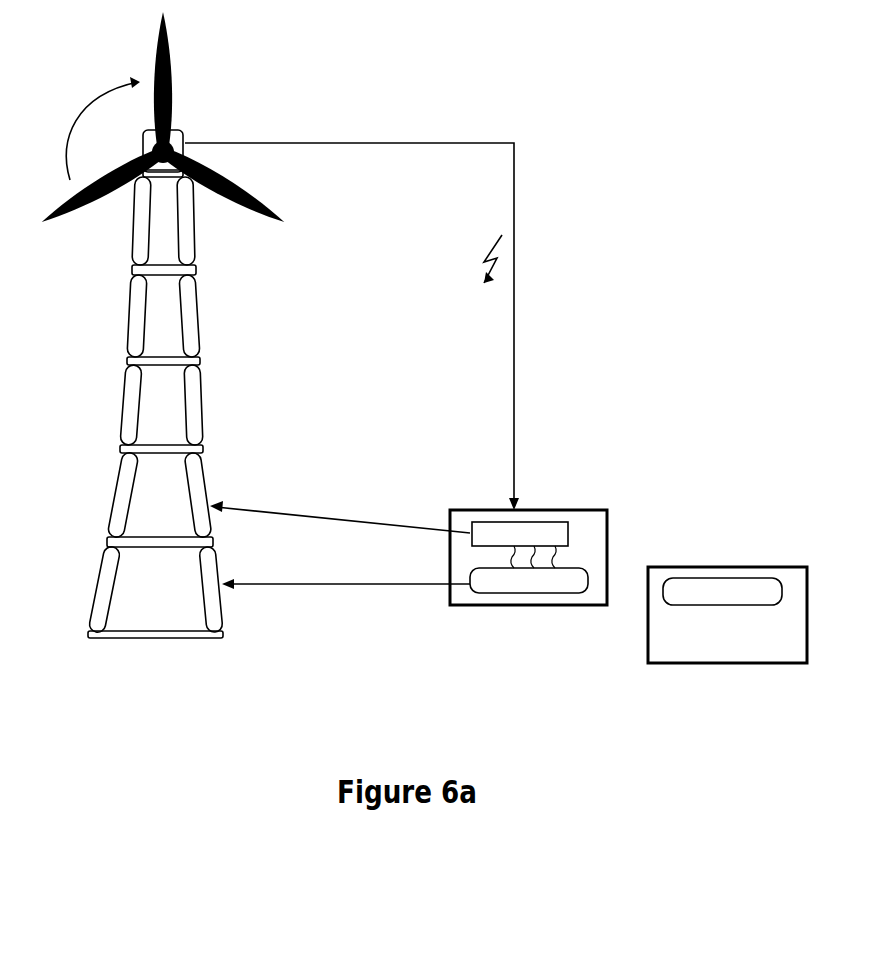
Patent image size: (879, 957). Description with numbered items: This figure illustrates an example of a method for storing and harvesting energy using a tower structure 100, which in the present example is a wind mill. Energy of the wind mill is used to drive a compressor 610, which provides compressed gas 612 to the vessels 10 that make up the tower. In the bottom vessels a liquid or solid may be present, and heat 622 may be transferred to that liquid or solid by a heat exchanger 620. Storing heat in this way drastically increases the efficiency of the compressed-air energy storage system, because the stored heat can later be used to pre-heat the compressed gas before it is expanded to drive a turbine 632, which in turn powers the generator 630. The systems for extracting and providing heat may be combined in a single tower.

The tower structure 100 is at (205, 75).
The vessels 10 is at (137, 302).
The compressor 610 is at (548, 523).
The compressed gas 612 is at (340, 511).
The heat exchanger 620 is at (518, 592).
The heat 622 is at (346, 595).
The generator 630 is at (665, 663).
The turbine 632 is at (693, 580).